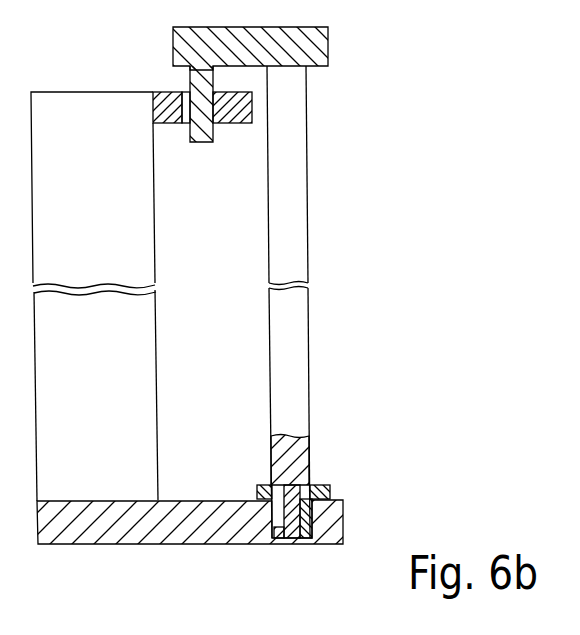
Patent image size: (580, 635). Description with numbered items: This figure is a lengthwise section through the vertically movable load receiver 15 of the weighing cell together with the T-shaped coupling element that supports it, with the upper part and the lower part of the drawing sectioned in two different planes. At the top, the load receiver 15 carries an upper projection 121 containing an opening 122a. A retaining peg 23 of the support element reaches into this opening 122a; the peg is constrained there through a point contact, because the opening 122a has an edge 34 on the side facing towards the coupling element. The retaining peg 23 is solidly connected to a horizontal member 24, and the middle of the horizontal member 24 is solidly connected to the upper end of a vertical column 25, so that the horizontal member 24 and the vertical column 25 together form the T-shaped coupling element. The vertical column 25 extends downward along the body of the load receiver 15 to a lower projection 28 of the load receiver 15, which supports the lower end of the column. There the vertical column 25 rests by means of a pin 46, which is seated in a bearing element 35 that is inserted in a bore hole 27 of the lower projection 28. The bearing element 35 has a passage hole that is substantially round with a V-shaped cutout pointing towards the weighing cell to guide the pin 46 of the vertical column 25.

The load receiver 15 is at (105, 355).
The retaining peg 23 is at (198, 77).
The horizontal member 24 is at (320, 48).
The vertical column 25 is at (293, 171).
The bore hole 27 is at (277, 535).
The lower projection 28 is at (189, 525).
The edge 34 is at (250, 104).
The bearing element 35 is at (317, 484).
The pin 46 is at (289, 525).
The upper projection 121 is at (153, 110).
The opening 122a is at (185, 118).